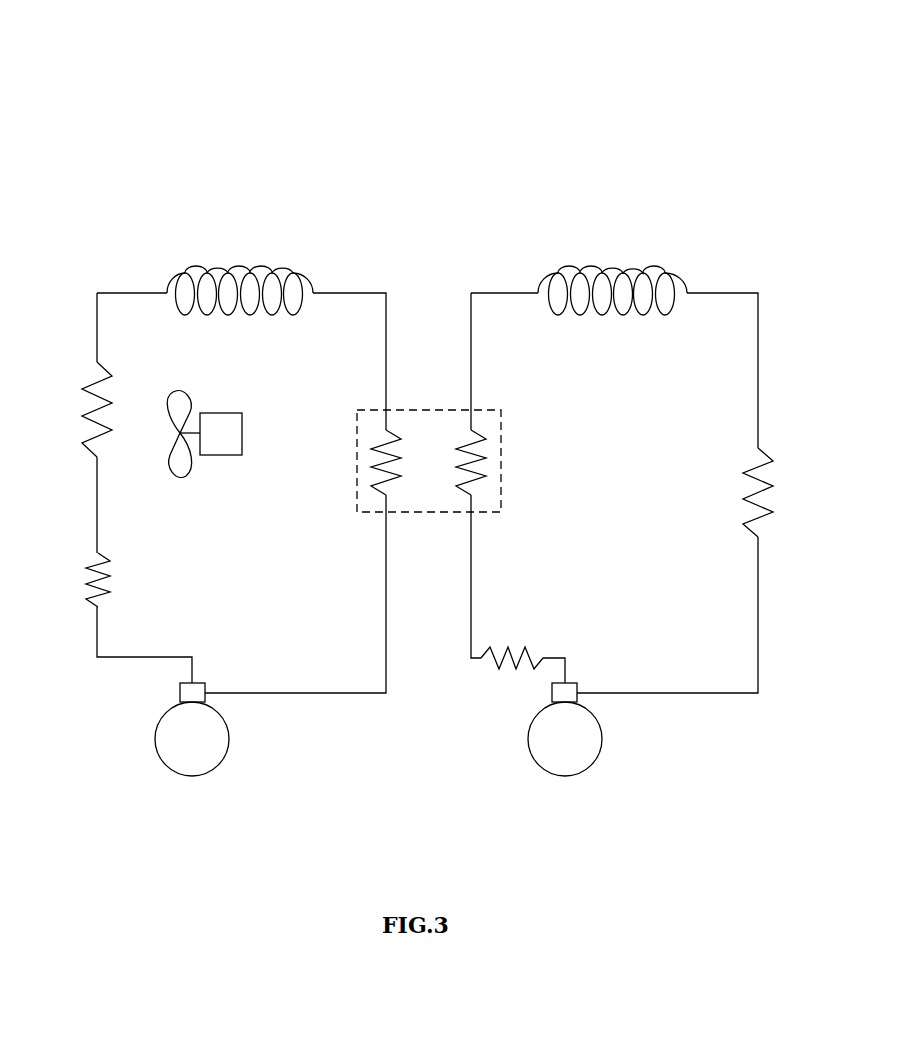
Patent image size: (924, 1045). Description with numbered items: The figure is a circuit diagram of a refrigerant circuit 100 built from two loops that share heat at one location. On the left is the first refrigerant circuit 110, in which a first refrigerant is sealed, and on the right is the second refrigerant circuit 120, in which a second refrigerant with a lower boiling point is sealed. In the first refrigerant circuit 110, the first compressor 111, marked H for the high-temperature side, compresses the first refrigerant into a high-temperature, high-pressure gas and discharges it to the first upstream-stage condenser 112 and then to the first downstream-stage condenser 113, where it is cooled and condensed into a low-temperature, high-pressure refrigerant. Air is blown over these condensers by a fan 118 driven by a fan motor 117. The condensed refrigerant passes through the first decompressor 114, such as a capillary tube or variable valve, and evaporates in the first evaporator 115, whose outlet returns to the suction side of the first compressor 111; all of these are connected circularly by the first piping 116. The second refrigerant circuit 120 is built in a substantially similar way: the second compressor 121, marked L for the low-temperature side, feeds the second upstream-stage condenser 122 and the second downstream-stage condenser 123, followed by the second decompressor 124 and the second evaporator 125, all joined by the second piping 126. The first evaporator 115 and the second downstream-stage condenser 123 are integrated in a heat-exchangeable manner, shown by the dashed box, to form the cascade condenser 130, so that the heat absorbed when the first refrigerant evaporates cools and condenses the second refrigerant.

The refrigerant circuit 100 is at (840, 130).
The first refrigerant circuit 110 is at (138, 227).
The first compressor 111 is at (227, 743).
The first upstream-stage condenser 112 is at (93, 556).
The first downstream-stage condenser 113 is at (87, 380).
The first decompressor 114 is at (280, 273).
The first evaporator 115 is at (388, 430).
The first piping 116 is at (337, 693).
The fan motor 117 is at (242, 455).
The fan 118 is at (195, 480).
The second refrigerant circuit 120 is at (708, 233).
The second compressor 121 is at (602, 743).
The second upstream-stage condenser 122 is at (497, 667).
The second downstream-stage condenser 123 is at (473, 430).
The second decompressor 124 is at (568, 275).
The second evaporator 125 is at (763, 448).
The second piping 126 is at (715, 693).
The cascade condenser 130 is at (448, 515).